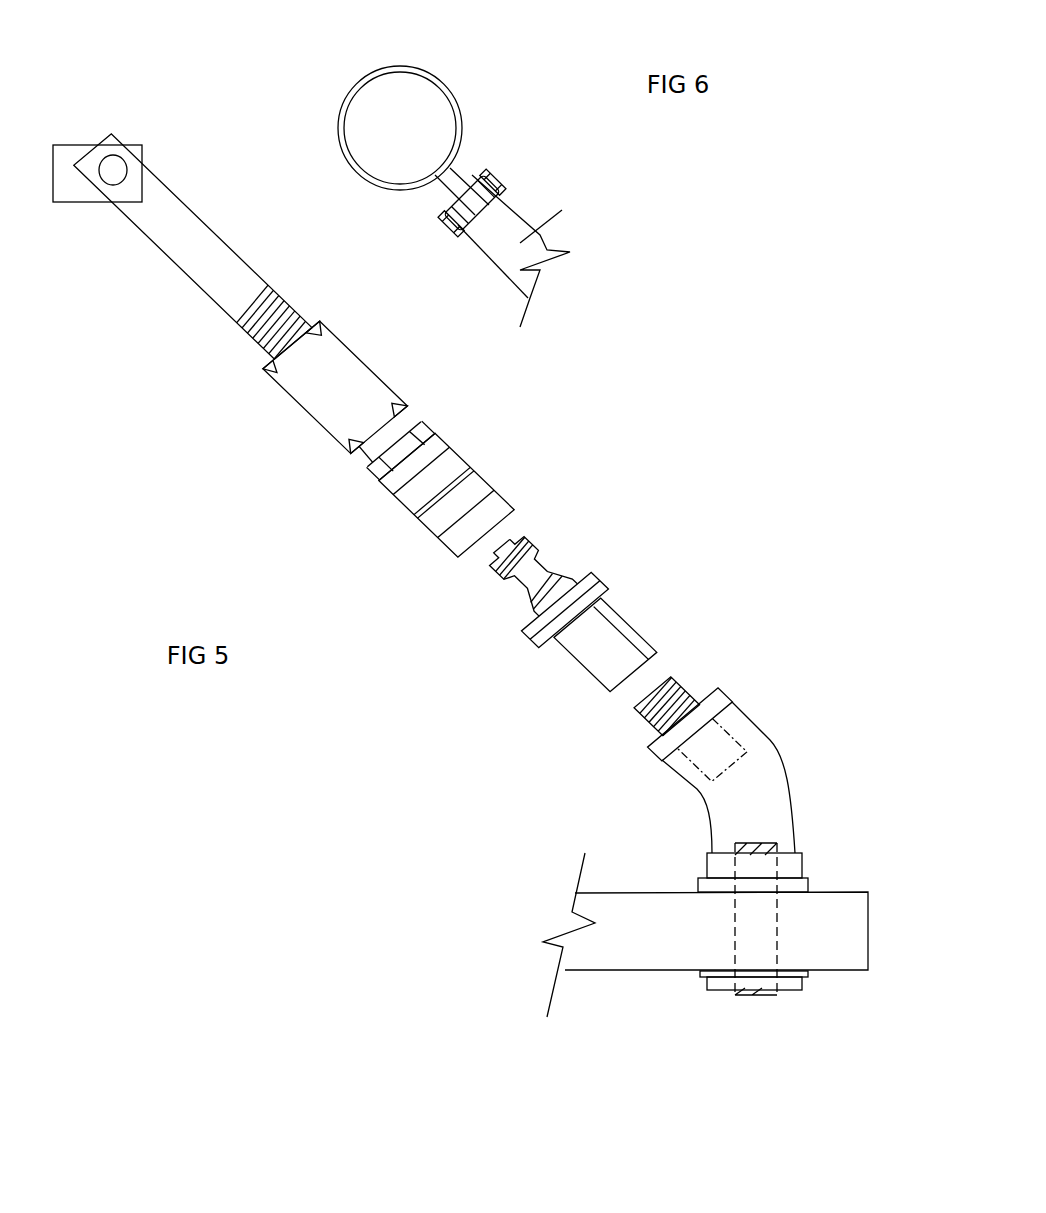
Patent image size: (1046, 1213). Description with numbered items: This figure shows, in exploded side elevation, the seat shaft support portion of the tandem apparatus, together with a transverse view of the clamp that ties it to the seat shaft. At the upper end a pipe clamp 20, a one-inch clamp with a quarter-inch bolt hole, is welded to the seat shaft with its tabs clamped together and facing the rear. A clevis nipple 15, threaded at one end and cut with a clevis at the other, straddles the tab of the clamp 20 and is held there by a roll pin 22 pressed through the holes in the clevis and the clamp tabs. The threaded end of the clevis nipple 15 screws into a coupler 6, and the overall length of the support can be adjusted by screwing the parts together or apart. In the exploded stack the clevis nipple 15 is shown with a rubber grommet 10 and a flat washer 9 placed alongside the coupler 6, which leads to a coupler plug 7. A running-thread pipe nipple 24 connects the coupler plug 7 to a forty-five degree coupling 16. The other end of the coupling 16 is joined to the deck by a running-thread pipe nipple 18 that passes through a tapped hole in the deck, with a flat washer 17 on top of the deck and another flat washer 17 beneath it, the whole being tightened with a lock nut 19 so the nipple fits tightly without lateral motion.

In FIG. 5, the clevis nipple 15 is at (193, 268).
In FIG. 6, the clevis nipple 15 is at (575, 228).
In FIG. 5, the pipe clamp 20 is at (62, 150).
In FIG. 6, the pipe clamp 20 is at (453, 97).
In FIG. 5, the roll pin 22 is at (115, 167).
In FIG. 6, the roll pin 22 is at (493, 180).
In FIG. 5, the coupler 6 is at (443, 437).
In FIG. 5, the rubber grommet 10 is at (595, 575).
In FIG. 5, the flat washer 9 is at (613, 583).
In FIG. 5, the coupler plug 7 is at (630, 633).
In FIG. 5, the pipe nipple 24 is at (647, 718).
In FIG. 5, the 45° coupling 16 is at (713, 805).
In FIG. 5, the flat washer 17 is at (803, 853).
In FIG. 5, the pipe nipple running thread 18 is at (735, 920).
In FIG. 5, the lock nut 19 is at (720, 983).